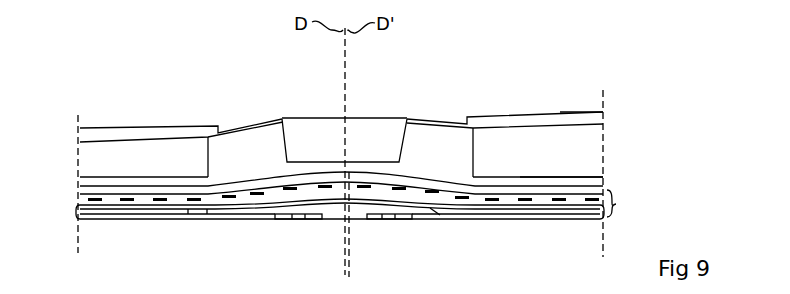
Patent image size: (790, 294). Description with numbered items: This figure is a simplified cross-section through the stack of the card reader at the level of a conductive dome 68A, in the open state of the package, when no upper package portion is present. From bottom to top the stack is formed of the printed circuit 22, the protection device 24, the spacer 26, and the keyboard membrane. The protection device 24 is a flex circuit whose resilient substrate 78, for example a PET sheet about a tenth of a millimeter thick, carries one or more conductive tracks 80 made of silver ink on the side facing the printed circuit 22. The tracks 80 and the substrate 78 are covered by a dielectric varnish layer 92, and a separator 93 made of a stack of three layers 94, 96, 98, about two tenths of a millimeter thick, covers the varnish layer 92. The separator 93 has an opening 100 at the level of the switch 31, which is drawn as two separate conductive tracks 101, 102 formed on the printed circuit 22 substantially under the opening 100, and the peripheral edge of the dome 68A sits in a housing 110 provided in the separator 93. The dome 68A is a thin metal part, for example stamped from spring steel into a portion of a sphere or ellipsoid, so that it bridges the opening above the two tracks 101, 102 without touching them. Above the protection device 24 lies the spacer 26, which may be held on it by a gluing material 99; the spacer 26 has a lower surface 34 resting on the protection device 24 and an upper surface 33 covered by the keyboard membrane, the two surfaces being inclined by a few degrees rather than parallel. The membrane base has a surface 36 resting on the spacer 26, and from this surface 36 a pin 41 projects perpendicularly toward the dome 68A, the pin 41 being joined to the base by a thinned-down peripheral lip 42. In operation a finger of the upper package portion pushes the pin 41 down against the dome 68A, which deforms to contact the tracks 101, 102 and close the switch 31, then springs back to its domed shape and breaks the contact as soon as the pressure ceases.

The printed circuit 22 is at (587, 237).
The protection device 24 is at (593, 112).
The spacer 26 is at (605, 146).
The switch 31 is at (280, 222).
The upper surface 33 is at (595, 123).
The lower surface 34 is at (588, 177).
The surface 36 is at (532, 122).
The pin 41 is at (367, 125).
The thinned-down peripheral lip 42 is at (440, 120).
The dome 68A is at (437, 215).
The substrate 78 is at (82, 193).
The conductive tracks 80 is at (80, 200).
The varnish layer 92 is at (78, 204).
The separator 93 is at (74, 212).
The layer 94 is at (512, 208).
The layer 96 is at (540, 213).
The layer 98 is at (562, 217).
The gluing material 99 is at (597, 183).
The opening 100 is at (218, 217).
The conductive track 101 is at (307, 221).
The conductive track 102 is at (392, 222).
The housing 110 is at (200, 213).